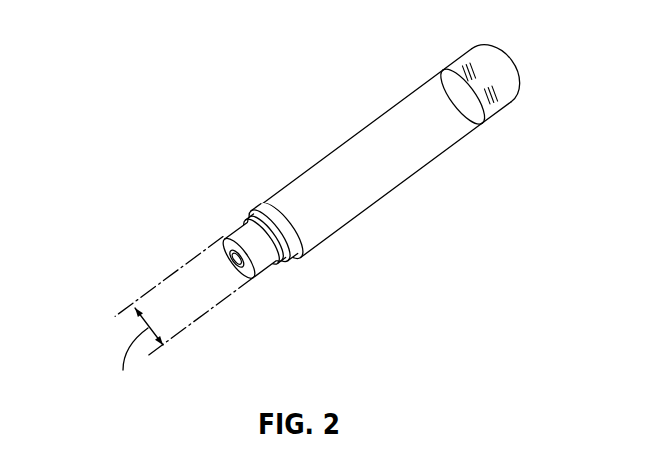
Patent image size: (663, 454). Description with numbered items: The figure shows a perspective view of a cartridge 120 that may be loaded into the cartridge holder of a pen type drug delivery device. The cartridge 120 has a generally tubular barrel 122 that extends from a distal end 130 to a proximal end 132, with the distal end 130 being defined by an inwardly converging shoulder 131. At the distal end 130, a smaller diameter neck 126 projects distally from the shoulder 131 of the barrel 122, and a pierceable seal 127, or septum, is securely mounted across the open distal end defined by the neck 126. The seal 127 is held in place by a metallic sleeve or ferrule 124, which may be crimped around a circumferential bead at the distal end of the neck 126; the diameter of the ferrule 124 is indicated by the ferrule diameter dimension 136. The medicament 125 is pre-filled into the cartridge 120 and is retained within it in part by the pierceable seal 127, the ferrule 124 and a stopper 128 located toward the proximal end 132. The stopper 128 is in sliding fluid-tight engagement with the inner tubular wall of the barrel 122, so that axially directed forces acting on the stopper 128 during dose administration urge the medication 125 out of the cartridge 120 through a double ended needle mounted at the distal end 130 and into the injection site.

The cartridge 120 is at (397, 130).
The barrel 122 is at (415, 175).
The ferrule 124 is at (257, 277).
The medicament 125 is at (362, 192).
The neck 126 is at (223, 215).
The pierceable seal 127 is at (227, 243).
The stopper 128 is at (460, 65).
The distal end 130 is at (248, 222).
The shoulder 131 is at (298, 262).
The proximal end 132 is at (503, 58).
The diameter D2 of ferrule 136 is at (123, 339).